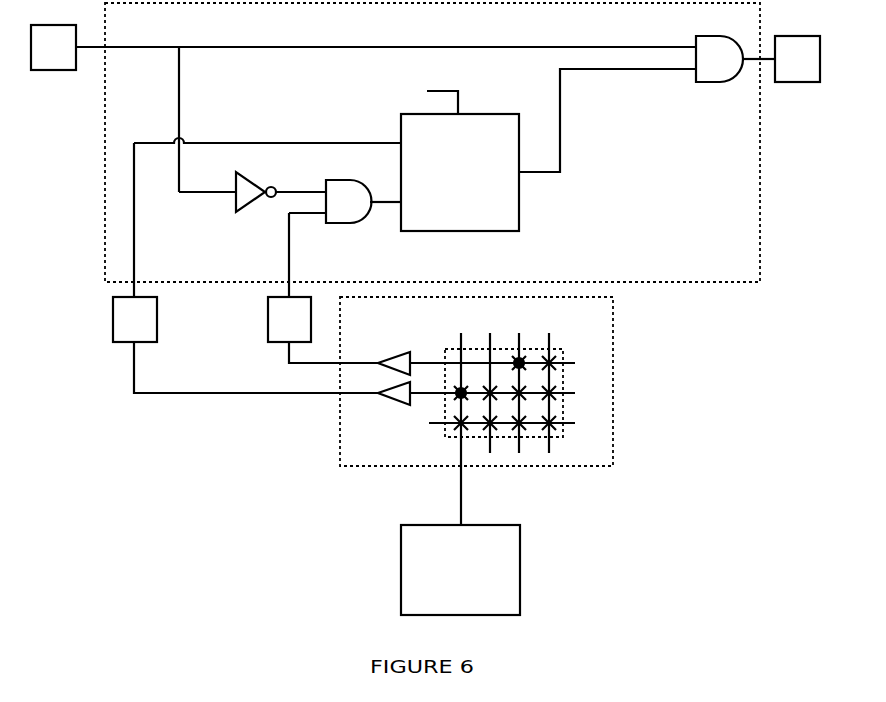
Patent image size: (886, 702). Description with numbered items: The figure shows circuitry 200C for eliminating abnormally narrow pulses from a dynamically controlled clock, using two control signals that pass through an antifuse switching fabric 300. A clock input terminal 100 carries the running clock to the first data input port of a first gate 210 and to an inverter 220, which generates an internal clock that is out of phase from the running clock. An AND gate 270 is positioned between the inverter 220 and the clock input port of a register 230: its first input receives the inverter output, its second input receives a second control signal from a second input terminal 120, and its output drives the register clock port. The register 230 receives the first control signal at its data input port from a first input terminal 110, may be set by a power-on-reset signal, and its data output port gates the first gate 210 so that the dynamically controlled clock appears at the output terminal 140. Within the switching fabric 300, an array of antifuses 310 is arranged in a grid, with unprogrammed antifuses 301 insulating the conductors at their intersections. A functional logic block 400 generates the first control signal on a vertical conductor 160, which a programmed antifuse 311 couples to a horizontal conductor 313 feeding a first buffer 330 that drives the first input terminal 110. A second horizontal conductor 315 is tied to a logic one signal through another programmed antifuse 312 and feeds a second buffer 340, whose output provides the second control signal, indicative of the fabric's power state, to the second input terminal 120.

The clock input terminal 100 is at (68, 56).
The first input terminal 110 is at (150, 328).
The second input terminal 120 is at (305, 328).
The output terminal 140 is at (812, 69).
The vertical conductor 160 is at (459, 474).
The circuitry 200C is at (160, 29).
The first gate 210 is at (735, 69).
The inverter 220 is at (244, 205).
The register 230 is at (475, 182).
The AND gate 270 is at (363, 210).
The antifuse switching fabric 300 is at (379, 324).
The unprogrammed antifuse 301 is at (551, 357).
The array of antifuses 310 is at (447, 423).
The programmed antifuse 311 is at (459, 388).
The programmed antifuse 312 is at (516, 356).
The horizontal conductor 313 is at (575, 393).
The second horizontal conductor 315 is at (575, 363).
The first buffer 330 is at (398, 405).
The second buffer 340 is at (398, 352).
The functional logic block 400 is at (476, 602).